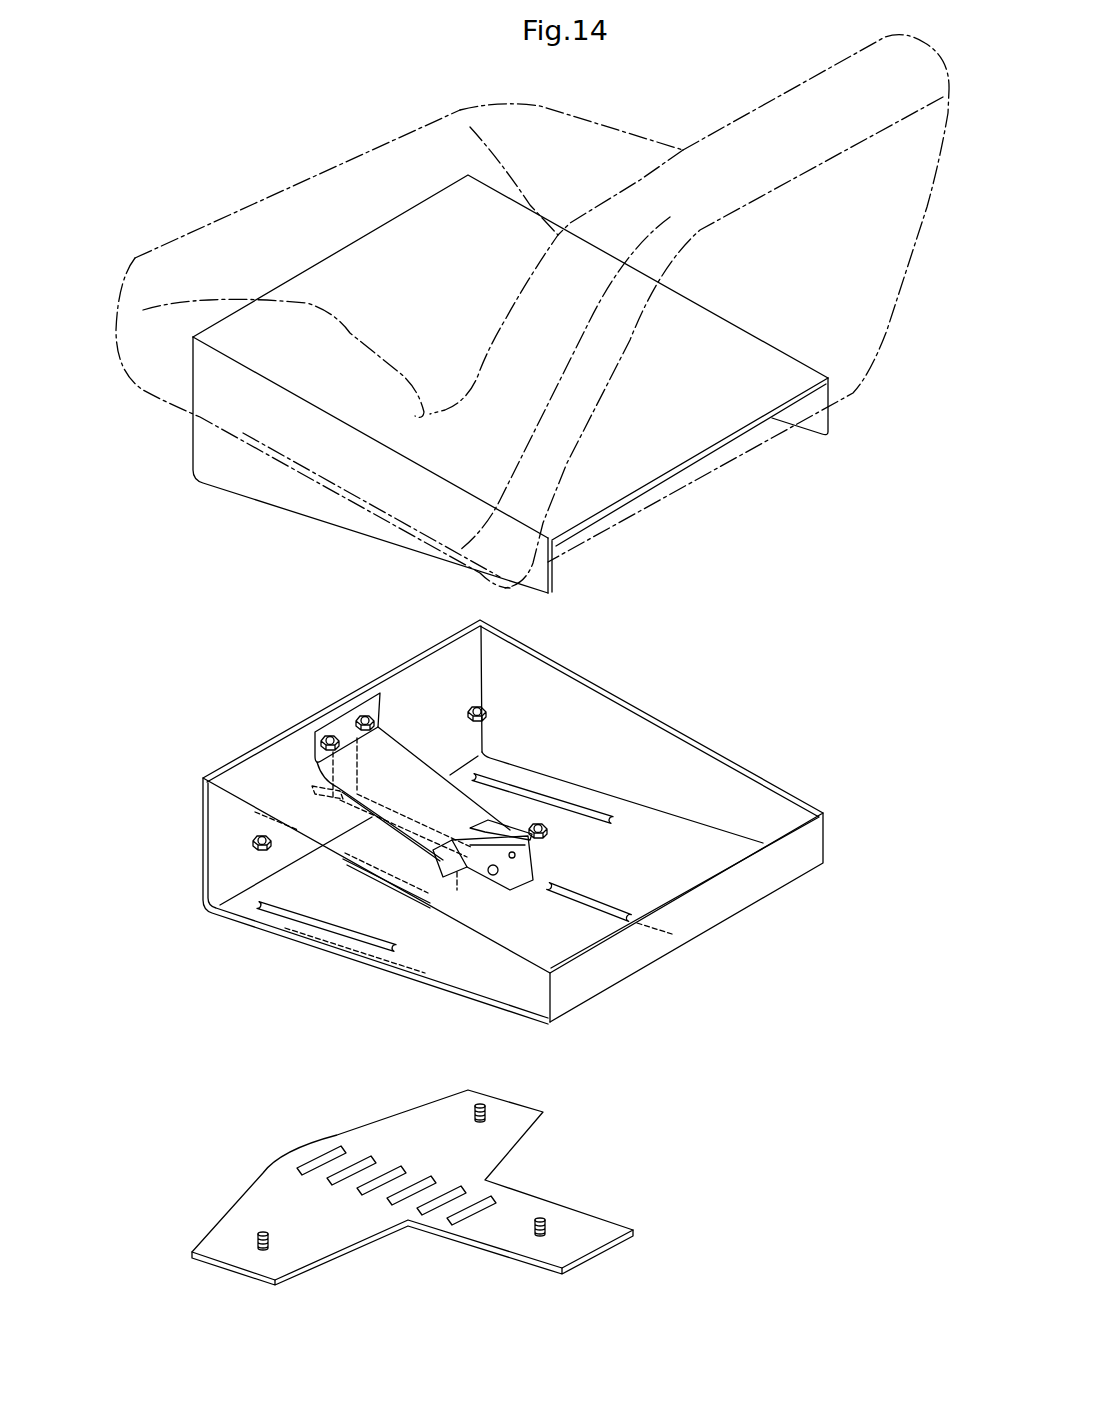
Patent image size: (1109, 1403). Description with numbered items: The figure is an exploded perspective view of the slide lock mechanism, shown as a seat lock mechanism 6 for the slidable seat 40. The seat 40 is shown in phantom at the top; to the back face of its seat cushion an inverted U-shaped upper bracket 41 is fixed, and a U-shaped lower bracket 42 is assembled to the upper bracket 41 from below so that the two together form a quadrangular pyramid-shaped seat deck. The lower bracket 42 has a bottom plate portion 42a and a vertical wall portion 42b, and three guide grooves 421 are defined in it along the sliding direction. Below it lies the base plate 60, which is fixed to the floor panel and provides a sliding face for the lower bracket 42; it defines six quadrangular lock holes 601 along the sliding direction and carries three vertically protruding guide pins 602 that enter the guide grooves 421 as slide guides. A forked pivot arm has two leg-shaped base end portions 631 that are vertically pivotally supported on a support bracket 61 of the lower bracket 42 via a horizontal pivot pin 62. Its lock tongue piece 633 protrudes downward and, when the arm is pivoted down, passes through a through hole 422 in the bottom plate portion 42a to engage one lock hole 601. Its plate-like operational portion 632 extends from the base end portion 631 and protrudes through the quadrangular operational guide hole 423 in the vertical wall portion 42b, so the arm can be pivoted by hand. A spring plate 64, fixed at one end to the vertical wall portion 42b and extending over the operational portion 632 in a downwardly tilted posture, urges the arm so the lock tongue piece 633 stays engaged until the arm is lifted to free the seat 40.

The seat 40 is at (290, 195).
The upper bracket 41 is at (245, 470).
The seat lock mechanism 6 is at (290, 693).
The lower bracket 42 is at (358, 687).
The bottom plate portion 42a is at (695, 847).
The vertical wall portion 42b is at (270, 770).
The guide groove 421 is at (542, 797).
The through hole 422 is at (465, 880).
The operational guide hole 423 is at (348, 803).
The support bracket 61 is at (545, 866).
The pivot pin 62 is at (510, 878).
The base end portion 631 is at (478, 870).
The operational portion 632 is at (360, 808).
The lock tongue piece 633 is at (452, 872).
The spring plate 64 is at (400, 767).
The base plate 60 is at (292, 1157).
The lock hole 601 is at (390, 1167).
The guide pin 602 is at (480, 1104).